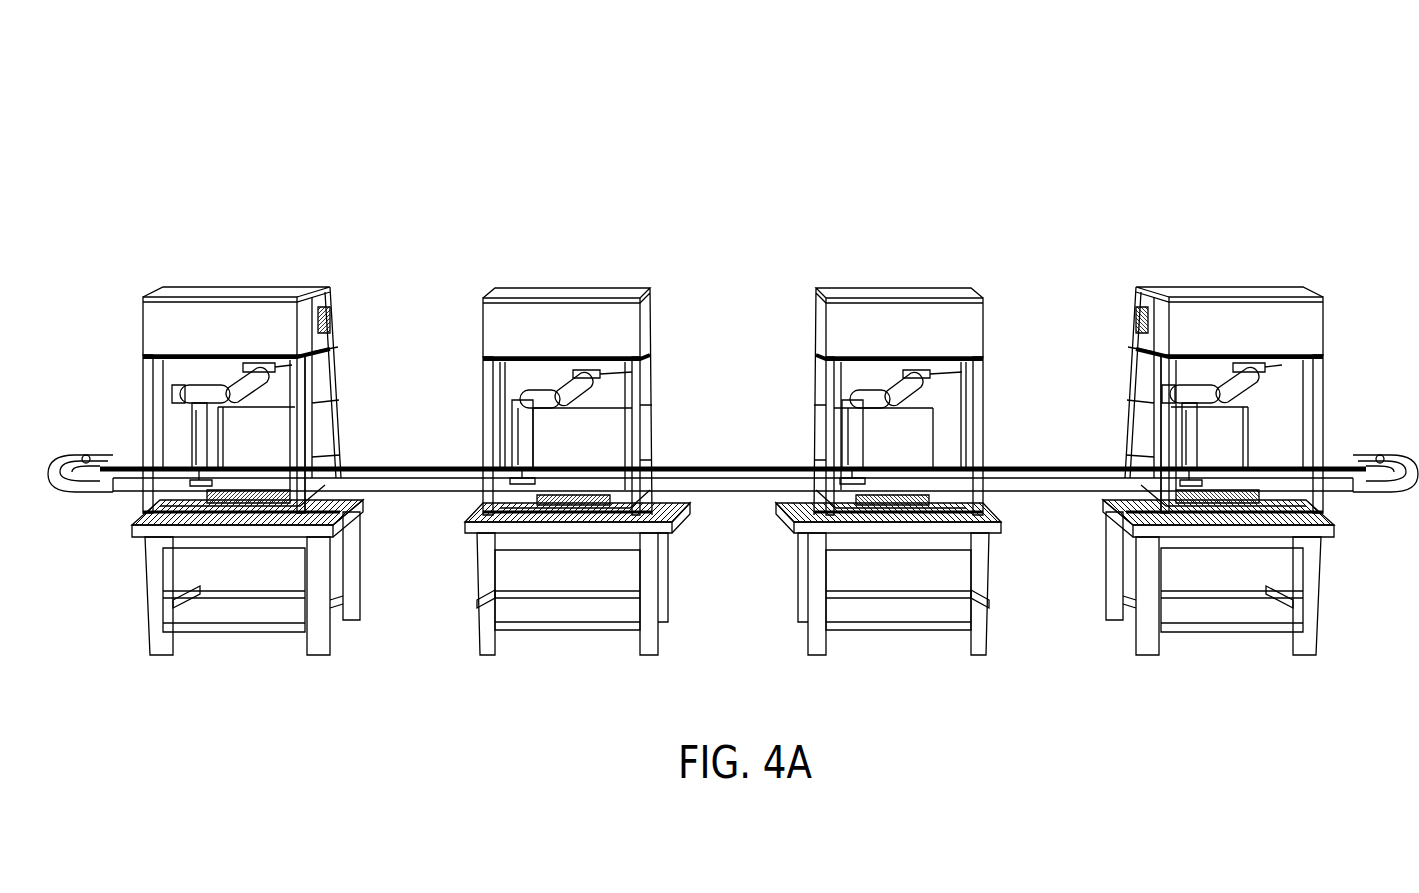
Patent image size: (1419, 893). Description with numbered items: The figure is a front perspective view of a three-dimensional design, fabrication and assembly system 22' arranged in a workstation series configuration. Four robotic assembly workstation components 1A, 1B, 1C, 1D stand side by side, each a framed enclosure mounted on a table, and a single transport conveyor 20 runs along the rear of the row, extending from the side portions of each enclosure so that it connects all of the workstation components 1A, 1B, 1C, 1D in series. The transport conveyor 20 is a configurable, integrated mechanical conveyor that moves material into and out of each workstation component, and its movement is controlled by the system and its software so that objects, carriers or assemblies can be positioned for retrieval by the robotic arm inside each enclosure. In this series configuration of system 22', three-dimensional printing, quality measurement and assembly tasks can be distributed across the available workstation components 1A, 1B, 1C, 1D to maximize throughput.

The system 22' is at (733, 351).
The robotic assembly workstation component 1A is at (186, 240).
The robotic assembly workstation component 1B is at (522, 240).
The robotic assembly workstation component 1C is at (841, 240).
The robotic assembly workstation component 1D is at (1178, 240).
The transport conveyor 20 is at (1387, 415).